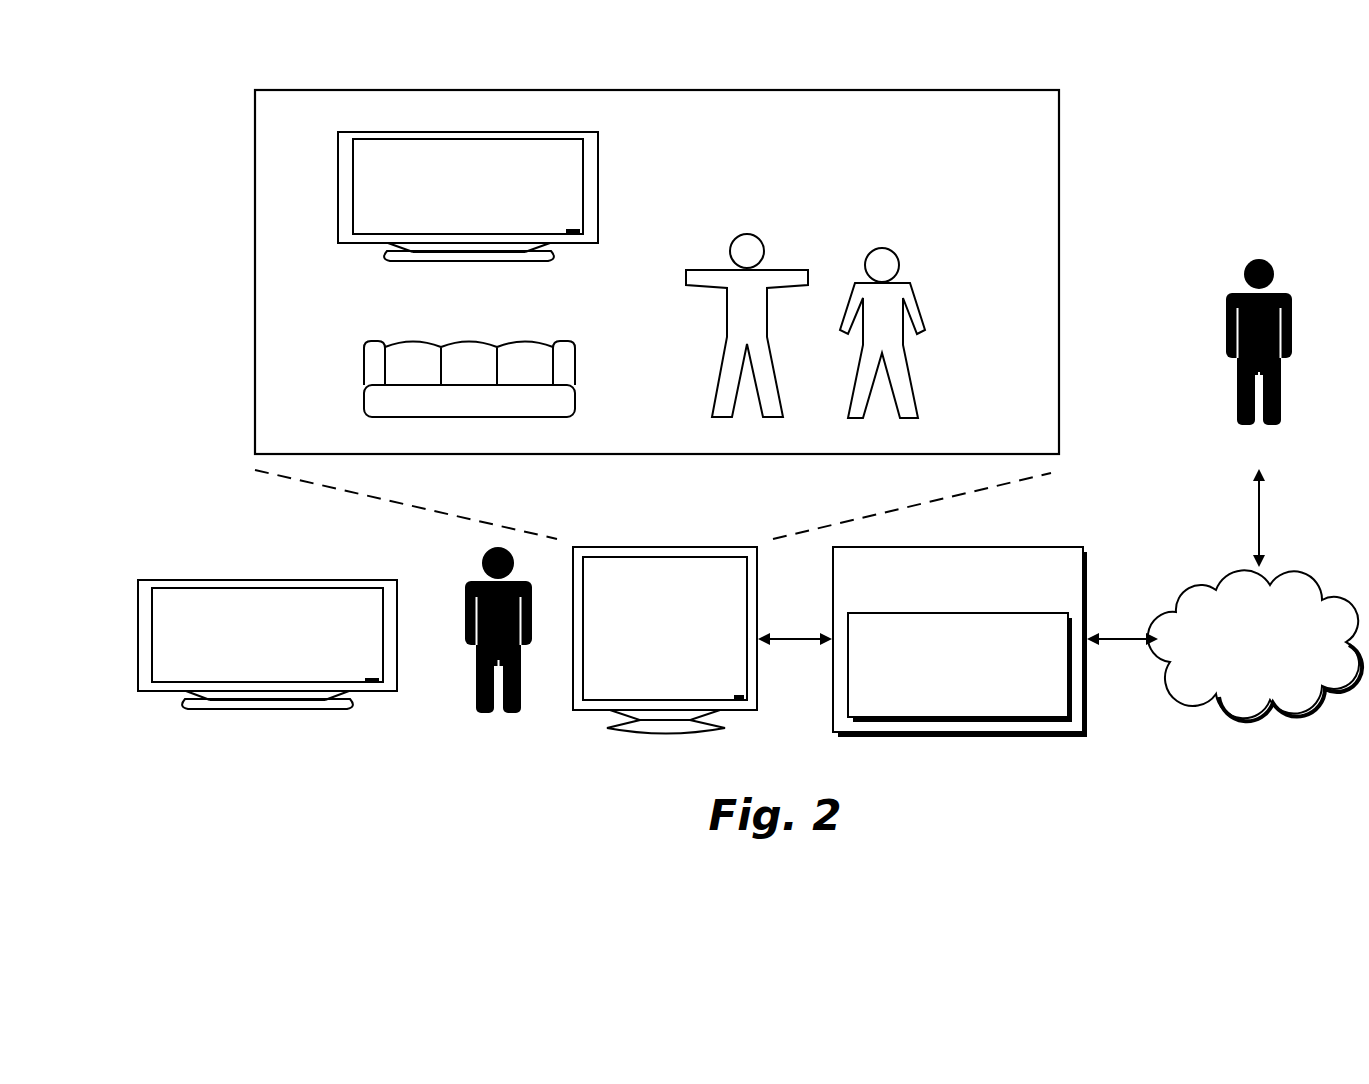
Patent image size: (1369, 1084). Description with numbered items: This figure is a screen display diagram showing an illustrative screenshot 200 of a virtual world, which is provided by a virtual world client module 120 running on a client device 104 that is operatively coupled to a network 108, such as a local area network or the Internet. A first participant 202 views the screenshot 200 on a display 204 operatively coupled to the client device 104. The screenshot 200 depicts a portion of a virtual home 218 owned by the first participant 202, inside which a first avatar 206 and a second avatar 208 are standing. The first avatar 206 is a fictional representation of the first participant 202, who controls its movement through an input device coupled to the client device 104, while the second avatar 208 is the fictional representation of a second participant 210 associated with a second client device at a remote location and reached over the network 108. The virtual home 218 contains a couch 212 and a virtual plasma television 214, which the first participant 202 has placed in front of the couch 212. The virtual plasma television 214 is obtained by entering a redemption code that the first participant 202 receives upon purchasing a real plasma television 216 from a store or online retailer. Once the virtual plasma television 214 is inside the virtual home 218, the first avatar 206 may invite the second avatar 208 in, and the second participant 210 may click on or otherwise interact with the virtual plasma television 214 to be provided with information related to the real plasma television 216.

The screenshot 200 is at (657, 90).
The virtual plasma television 214 is at (457, 132).
The couch 212 is at (455, 341).
The first avatar 206 is at (747, 339).
The second avatar 208 is at (882, 346).
The virtual home 218 is at (905, 155).
The real plasma television 216 is at (257, 580).
The first participant 202 is at (498, 646).
The display 204 is at (665, 640).
The client device 104 is at (959, 641).
The virtual world client module 120 is at (959, 666).
The network 108 is at (1255, 645).
The second participant 210 is at (1259, 358).